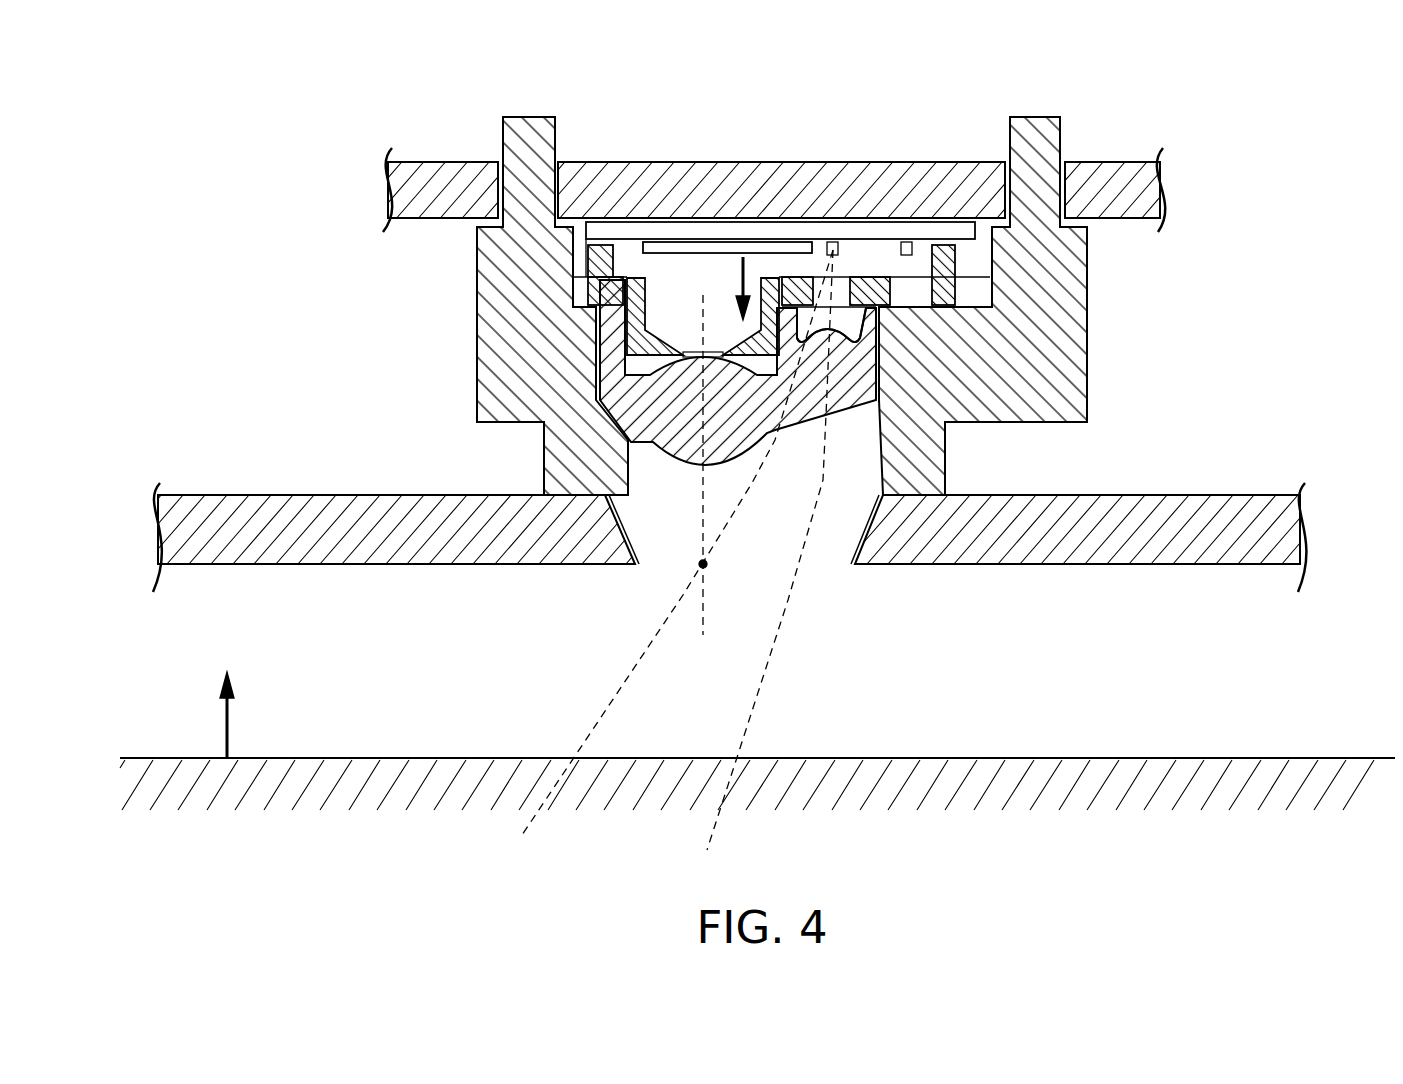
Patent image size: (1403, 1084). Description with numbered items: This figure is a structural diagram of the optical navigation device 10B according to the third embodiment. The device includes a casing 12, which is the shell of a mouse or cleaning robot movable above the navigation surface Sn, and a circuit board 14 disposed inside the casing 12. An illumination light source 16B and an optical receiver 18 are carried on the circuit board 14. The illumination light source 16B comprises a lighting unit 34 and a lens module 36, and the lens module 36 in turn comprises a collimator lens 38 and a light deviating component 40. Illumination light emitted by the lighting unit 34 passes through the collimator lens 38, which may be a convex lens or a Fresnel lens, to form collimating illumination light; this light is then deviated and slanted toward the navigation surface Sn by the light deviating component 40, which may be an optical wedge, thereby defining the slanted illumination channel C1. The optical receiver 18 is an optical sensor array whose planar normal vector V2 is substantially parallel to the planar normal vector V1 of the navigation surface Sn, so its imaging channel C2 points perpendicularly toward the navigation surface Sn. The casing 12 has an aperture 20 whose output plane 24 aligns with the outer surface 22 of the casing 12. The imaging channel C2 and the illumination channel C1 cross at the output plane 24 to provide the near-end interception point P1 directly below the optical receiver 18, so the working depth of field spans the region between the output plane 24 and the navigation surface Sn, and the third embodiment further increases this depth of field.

The optical navigation device 10B is at (1253, 133).
The casing 12 is at (1103, 177).
The circuit board 14 is at (773, 233).
The optical receiver 18 is at (703, 248).
The lighting unit 34 is at (830, 247).
The illumination light source 16B is at (929, 236).
The lens module 36 is at (1024, 345).
The collimator lens 38 is at (833, 342).
The light deviating component 40 is at (850, 394).
The aperture 20 is at (698, 412).
The outer surface 22 is at (341, 564).
The output plane 24 is at (660, 565).
The near-end interception point P1 is at (704, 566).
The illumination channel C1 is at (796, 599).
The imaging channel C2 is at (660, 491).
The planar normal vector V1 is at (226, 699).
The planar normal vector V2 is at (741, 257).
The navigation surface Sn is at (152, 757).